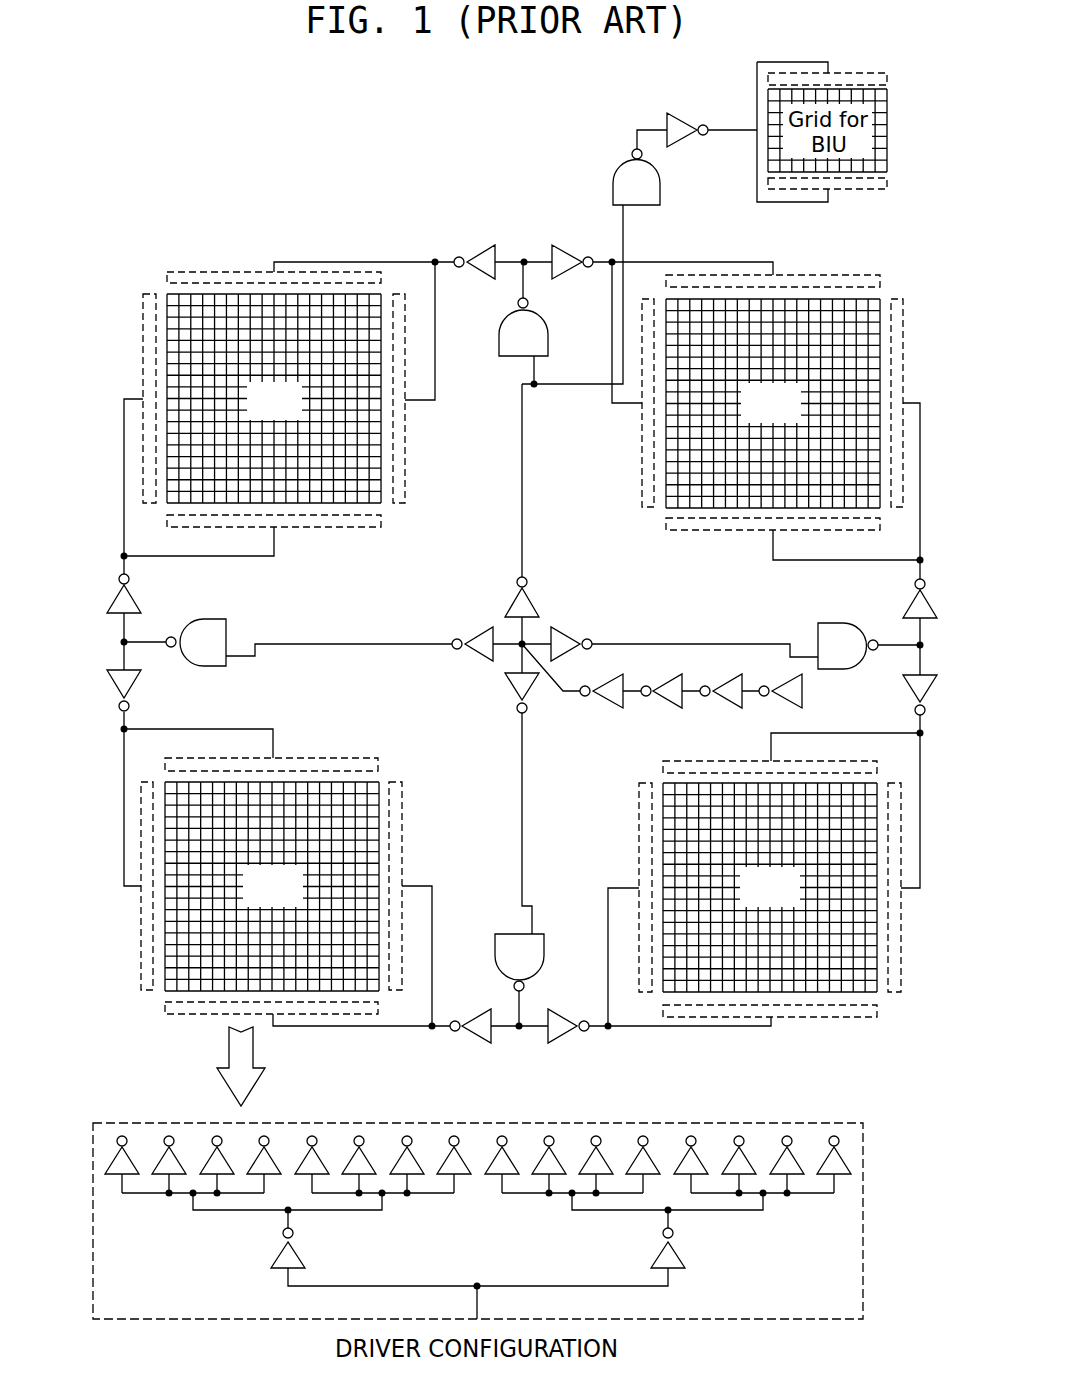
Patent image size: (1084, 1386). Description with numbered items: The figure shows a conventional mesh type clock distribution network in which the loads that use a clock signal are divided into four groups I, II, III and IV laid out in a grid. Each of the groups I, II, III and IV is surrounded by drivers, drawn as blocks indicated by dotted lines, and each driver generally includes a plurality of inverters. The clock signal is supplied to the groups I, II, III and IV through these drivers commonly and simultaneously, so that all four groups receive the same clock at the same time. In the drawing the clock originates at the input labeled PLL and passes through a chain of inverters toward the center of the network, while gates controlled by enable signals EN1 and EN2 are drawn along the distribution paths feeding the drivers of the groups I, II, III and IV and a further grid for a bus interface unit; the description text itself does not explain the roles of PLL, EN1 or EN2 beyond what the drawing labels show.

The first group I is at (274, 399).
The second group II is at (772, 402).
The third group III is at (271, 886).
The fourth group IV is at (770, 889).
The first enable signal NAND gates EN1 is at (508, 917).
The second enable signal NAND gate EN2 is at (649, 205).
The PLL clock input inverter chain PLL is at (802, 691).